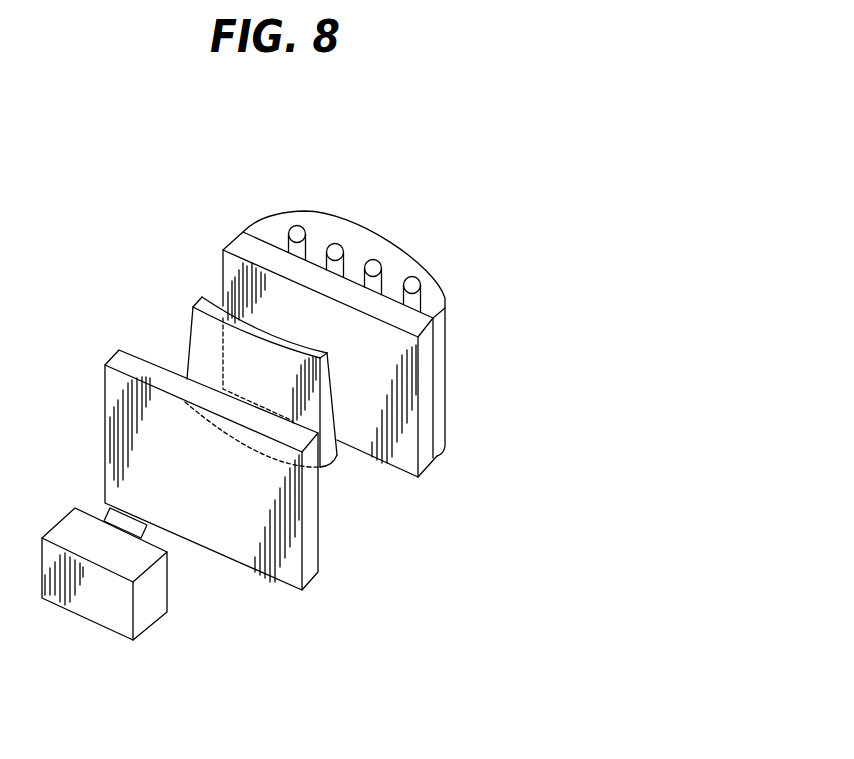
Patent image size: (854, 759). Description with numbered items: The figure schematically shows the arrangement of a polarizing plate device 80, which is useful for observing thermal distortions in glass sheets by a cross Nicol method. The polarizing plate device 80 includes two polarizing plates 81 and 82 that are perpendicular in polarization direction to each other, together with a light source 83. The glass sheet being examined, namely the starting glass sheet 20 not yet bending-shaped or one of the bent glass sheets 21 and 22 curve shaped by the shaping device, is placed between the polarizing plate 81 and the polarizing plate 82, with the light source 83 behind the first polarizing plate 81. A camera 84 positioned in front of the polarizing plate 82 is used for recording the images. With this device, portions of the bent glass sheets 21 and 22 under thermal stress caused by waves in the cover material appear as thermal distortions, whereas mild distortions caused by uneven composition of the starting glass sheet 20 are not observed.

The polarizing plate device 80 is at (480, 156).
The polarizing plate 81 is at (425, 447).
The light source 83 is at (412, 285).
The glass sheet 20 is at (346, 428).
The bent glass sheet 21 is at (346, 428).
The bent glass sheet 22 is at (341, 453).
The polarizing plate 82 is at (310, 562).
The camera 84 is at (148, 610).